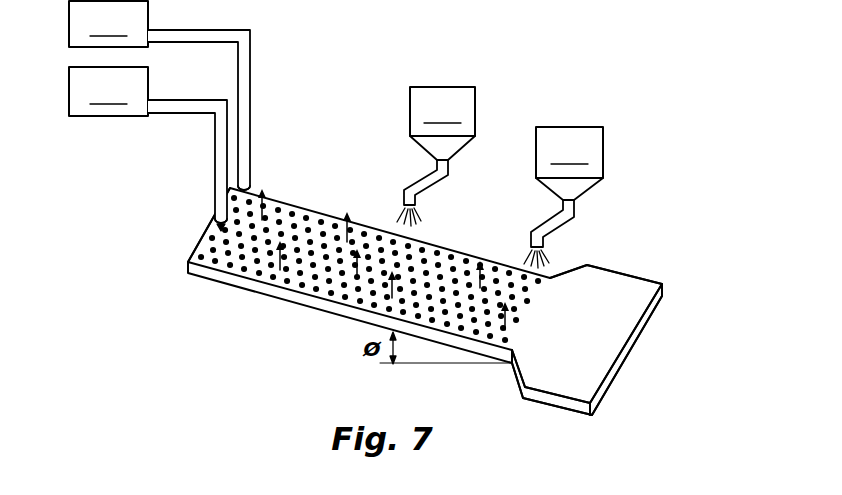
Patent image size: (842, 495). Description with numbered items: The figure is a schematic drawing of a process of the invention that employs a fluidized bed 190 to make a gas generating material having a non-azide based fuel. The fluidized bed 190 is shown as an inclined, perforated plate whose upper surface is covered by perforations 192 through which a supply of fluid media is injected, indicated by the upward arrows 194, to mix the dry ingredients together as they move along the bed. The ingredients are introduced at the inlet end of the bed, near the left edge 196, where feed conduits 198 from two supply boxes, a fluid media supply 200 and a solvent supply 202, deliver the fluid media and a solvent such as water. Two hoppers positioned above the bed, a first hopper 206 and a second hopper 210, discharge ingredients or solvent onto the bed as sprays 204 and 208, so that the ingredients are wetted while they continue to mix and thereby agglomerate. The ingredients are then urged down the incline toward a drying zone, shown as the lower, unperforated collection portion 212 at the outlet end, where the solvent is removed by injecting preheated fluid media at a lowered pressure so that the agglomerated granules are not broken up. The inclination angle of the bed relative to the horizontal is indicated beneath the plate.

The fluidized bed 190 is at (219, 289).
The perforations 192 is at (452, 265).
The air jets 194 is at (313, 290).
The plate edge 196 is at (192, 250).
The feed conduits 198 is at (266, 179).
The air source 200 is at (159, 95).
The water source 202 is at (148, 149).
The spray 204 is at (425, 236).
The hopper 206 is at (439, 146).
The spray 208 is at (551, 268).
The hopper 210 is at (567, 187).
The collection portion 212 is at (628, 348).